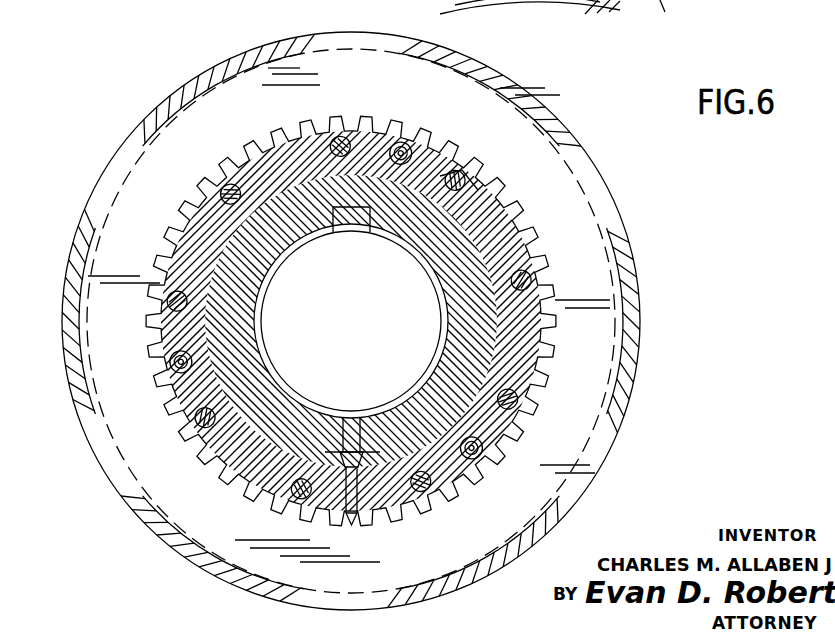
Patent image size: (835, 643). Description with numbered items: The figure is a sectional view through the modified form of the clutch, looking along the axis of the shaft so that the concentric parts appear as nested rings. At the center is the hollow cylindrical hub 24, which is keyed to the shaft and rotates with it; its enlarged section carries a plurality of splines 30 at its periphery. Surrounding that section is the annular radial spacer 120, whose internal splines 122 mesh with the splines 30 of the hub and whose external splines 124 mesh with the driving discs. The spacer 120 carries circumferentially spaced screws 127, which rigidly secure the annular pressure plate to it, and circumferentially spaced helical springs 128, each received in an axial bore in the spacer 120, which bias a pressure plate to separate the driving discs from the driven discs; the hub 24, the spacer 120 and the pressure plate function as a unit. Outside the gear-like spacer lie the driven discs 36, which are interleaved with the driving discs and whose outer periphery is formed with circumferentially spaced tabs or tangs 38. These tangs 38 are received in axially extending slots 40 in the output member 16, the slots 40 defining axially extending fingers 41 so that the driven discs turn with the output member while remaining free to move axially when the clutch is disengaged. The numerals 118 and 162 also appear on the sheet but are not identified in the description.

The output member 16 is at (213, 30).
The hub 24 is at (275, 352).
The splines 30 is at (287, 195).
The driven discs 36 is at (346, 107).
The tangs 38 is at (351, 316).
The slots 40 is at (353, 315).
The fingers 41 is at (370, 321).
The member 118 is at (707, 6).
The spacer 120 is at (300, 175).
The internal splines 122 is at (384, 197).
The external splines 124 is at (462, 170).
The screws 127 is at (349, 325).
The helical springs 128 is at (304, 300).
The member 162 is at (679, 29).